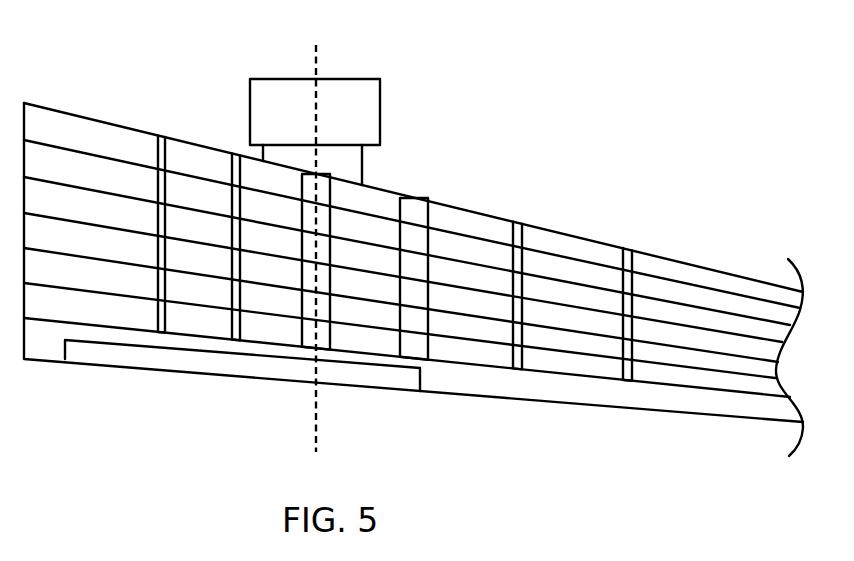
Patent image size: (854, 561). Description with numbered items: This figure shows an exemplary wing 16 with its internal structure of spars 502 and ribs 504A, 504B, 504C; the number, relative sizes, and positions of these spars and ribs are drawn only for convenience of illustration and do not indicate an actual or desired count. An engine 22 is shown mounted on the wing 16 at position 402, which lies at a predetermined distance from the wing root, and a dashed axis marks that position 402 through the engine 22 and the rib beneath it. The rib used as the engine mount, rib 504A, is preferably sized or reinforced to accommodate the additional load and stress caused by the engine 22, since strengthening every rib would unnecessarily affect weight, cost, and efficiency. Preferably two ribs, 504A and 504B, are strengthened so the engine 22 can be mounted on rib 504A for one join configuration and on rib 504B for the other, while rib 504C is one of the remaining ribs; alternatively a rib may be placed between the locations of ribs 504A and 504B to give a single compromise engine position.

The wing 16 is at (413, 238).
The engine 22 is at (380, 101).
The position 402 is at (313, 236).
The spars 502 is at (95, 220).
The rib 504A is at (324, 173).
The rib 504B is at (414, 196).
The rib 504C is at (518, 221).